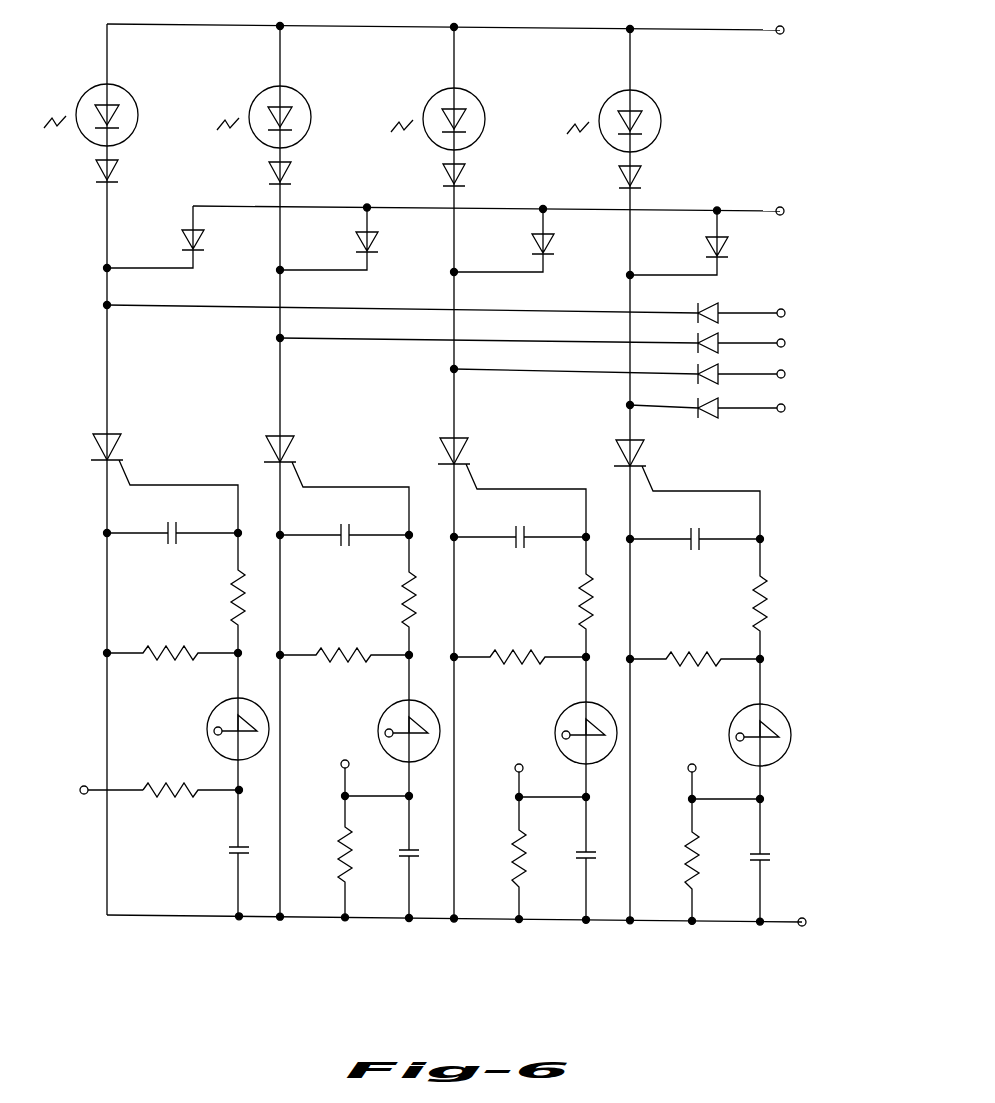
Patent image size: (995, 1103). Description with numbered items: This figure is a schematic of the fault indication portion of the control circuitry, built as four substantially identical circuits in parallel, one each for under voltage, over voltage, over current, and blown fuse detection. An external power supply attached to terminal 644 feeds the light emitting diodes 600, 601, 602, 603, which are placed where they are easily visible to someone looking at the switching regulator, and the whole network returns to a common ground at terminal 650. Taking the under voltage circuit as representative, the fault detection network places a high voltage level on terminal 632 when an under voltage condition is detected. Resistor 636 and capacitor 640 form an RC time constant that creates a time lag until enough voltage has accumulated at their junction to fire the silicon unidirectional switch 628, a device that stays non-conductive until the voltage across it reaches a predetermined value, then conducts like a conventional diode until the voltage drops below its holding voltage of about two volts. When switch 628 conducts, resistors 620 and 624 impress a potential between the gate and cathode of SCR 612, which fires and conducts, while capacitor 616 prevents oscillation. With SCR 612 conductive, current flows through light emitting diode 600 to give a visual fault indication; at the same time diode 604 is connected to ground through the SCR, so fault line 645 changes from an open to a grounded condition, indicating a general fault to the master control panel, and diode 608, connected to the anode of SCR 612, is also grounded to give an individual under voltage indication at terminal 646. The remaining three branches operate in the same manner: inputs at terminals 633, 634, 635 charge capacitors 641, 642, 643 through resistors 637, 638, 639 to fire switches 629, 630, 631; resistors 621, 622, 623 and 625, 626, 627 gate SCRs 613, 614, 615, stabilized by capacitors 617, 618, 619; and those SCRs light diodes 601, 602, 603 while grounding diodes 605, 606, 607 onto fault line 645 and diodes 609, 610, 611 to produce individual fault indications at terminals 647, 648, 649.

The light emitting diode 600 is at (131, 95).
The light emitting diode 601 is at (304, 97).
The light emitting diode 602 is at (478, 99).
The light emitting diode 603 is at (654, 101).
The diode 604 is at (204, 243).
The diode 605 is at (378, 245).
The diode 606 is at (554, 247).
The diode 607 is at (728, 250).
The diode 608 is at (716, 304).
The diode 609 is at (716, 334).
The diode 610 is at (716, 365).
The diode 611 is at (716, 399).
The SCR 612 is at (121, 440).
The SCR 613 is at (294, 442).
The SCR 614 is at (468, 444).
The SCR 615 is at (644, 446).
The capacitor 616 is at (178, 540).
The capacitor 617 is at (351, 542).
The capacitor 618 is at (526, 544).
The capacitor 619 is at (701, 546).
The resistor 620 is at (230, 598).
The resistor 621 is at (401, 600).
The resistor 622 is at (578, 602).
The resistor 623 is at (752, 604).
The resistor 624 is at (190, 660).
The resistor 625 is at (363, 662).
The resistor 626 is at (537, 664).
The resistor 627 is at (713, 666).
The silicon unidirectional switch 628 is at (207, 731).
The silicon unidirectional switch 629 is at (378, 733).
The silicon unidirectional switch 630 is at (555, 735).
The silicon unidirectional switch 631 is at (729, 737).
The terminal 632 is at (82, 794).
The terminal 633 is at (341, 764).
The terminal 634 is at (515, 768).
The terminal 635 is at (688, 768).
The resistor 636 is at (190, 796).
The resistor 637 is at (337, 853).
The resistor 638 is at (514, 845).
The resistor 639 is at (687, 847).
The capacitor 640 is at (222, 850).
The capacitor 641 is at (398, 858).
The capacitor 642 is at (573, 857).
The capacitor 643 is at (747, 859).
The terminal 644 is at (784, 28).
The fault line 645 is at (784, 209).
The terminal 646 is at (785, 311).
The terminal 647 is at (785, 341).
The terminal 648 is at (785, 372).
The terminal 649 is at (785, 406).
The terminal 650 is at (800, 926).